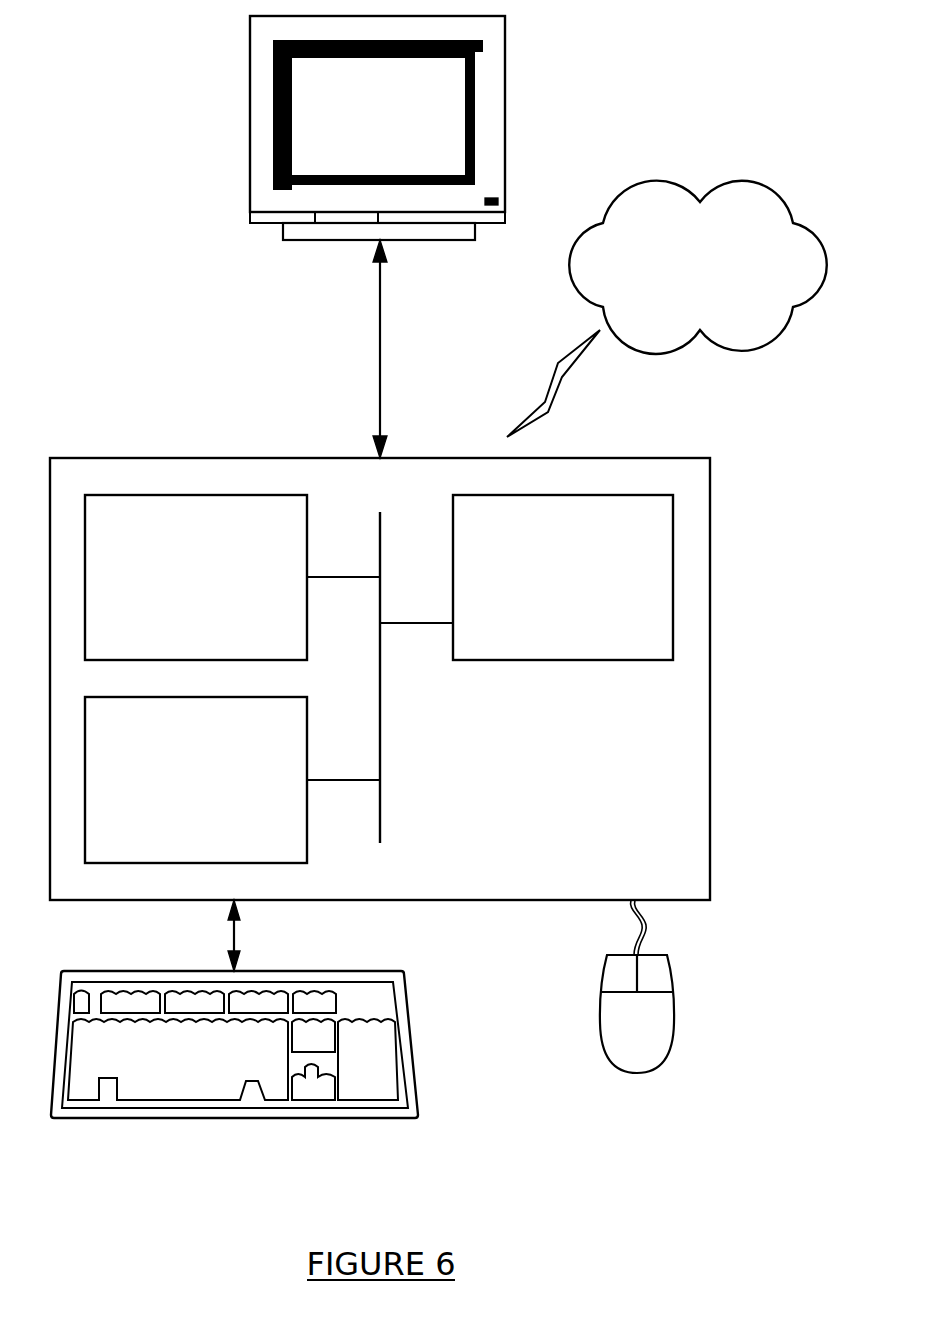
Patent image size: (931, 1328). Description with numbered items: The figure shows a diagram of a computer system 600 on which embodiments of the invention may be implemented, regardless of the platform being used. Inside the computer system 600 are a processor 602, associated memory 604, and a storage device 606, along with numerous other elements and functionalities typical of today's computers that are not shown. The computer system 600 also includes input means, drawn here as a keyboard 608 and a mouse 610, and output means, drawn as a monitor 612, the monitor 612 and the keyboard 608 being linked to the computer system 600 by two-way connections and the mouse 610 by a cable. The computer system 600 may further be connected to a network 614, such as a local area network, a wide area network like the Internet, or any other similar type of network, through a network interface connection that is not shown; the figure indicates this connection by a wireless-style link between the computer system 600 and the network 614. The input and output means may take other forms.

The computer system 600 is at (736, 524).
The processor 602 is at (541, 588).
The memory 604 is at (174, 588).
The storage device 606 is at (174, 791).
The keyboard 608 is at (157, 1072).
The mouse 610 is at (616, 1038).
The monitor 612 is at (357, 132).
The network 614 is at (679, 276).